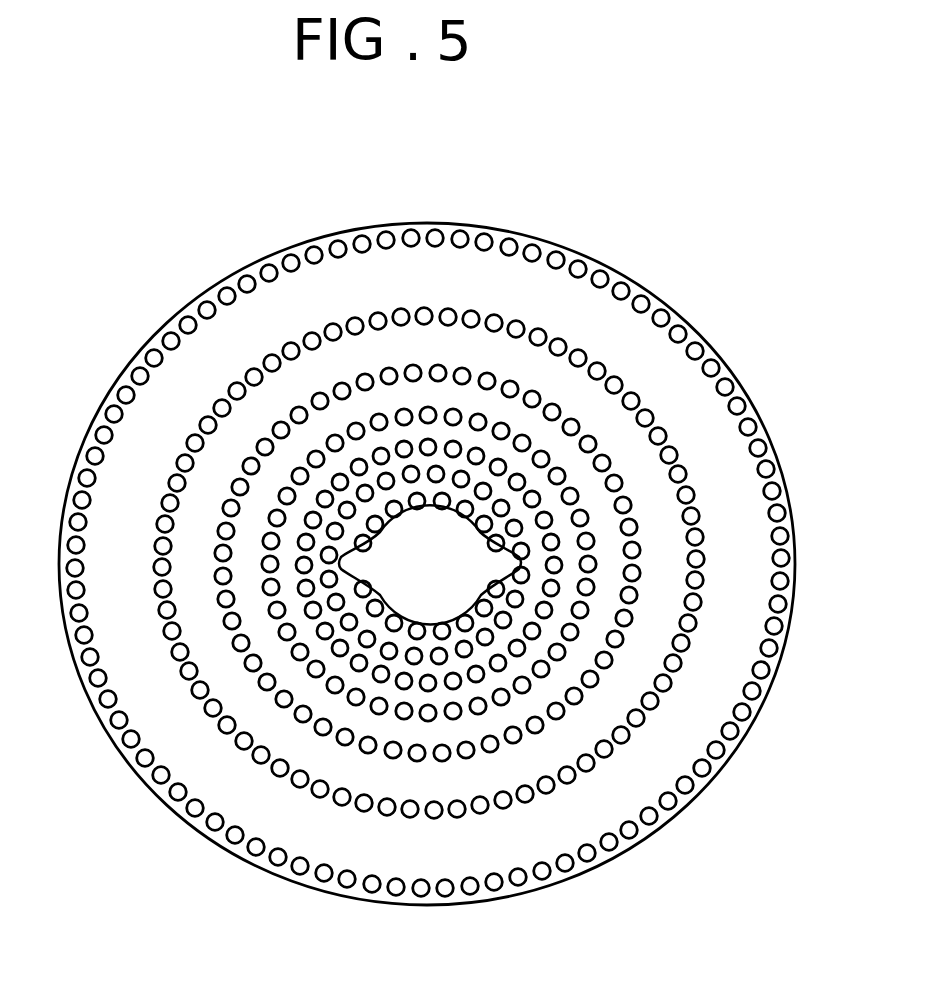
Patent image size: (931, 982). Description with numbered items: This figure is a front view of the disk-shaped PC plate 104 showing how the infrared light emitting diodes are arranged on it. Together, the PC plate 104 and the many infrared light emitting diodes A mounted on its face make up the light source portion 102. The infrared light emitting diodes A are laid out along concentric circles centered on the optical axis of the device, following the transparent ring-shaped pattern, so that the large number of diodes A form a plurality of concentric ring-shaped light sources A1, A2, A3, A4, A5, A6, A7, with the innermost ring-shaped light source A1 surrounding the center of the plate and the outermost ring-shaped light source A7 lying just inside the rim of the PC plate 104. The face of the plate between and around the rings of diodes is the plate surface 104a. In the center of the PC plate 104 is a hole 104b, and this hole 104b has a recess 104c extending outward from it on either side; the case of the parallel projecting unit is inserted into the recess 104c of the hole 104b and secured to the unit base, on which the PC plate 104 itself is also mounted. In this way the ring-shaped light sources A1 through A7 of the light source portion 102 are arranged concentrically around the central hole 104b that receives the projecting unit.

The light source portion 102 is at (169, 325).
The PC plate 104 is at (177, 820).
The plate surface between hole rings 104a is at (177, 740).
The hole 104b is at (380, 593).
The recess 104c is at (503, 564).
The infrared light emitting diode A is at (378, 417).
The concentric ring-shaped light source A1 is at (385, 631).
The concentric ring-shaped light source A2 is at (410, 668).
The concentric ring-shaped light source A3 is at (432, 691).
The concentric ring-shaped light source A4 is at (464, 722).
The concentric ring-shaped light source A5 is at (525, 742).
The concentric ring-shaped light source A6 is at (591, 772).
The concentric ring-shaped light source A7 is at (759, 693).